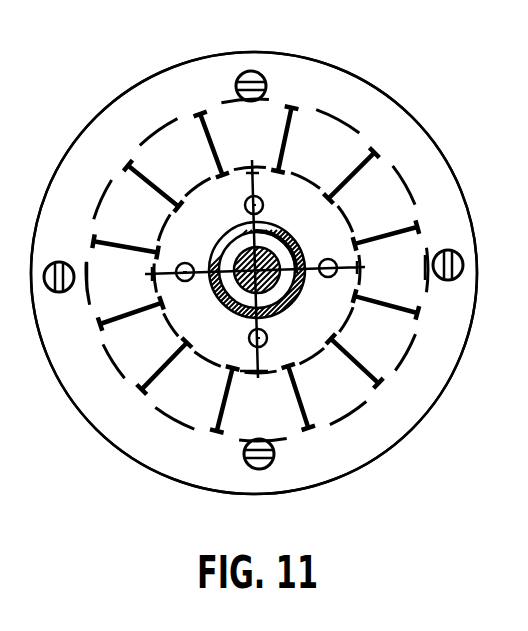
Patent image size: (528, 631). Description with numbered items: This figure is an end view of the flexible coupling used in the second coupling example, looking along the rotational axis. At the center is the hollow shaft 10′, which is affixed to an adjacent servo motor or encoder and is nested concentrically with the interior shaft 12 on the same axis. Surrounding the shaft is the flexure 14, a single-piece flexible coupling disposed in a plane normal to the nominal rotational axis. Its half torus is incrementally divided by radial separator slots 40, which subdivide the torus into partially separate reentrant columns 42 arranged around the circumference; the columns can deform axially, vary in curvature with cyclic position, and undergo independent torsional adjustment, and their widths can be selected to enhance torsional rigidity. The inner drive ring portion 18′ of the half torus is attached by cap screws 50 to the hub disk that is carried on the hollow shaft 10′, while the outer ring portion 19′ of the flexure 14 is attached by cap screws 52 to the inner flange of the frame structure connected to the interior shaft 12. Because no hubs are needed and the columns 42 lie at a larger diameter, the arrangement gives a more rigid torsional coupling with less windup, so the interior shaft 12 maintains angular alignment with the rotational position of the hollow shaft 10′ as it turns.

The flexure 14 is at (446, 56).
The outer ring portion 19′ is at (88, 157).
The cap screws 52 is at (264, 71).
The reentrant columns 42 is at (380, 328).
The radial separator slots 40 is at (152, 190).
The inner drive ring portion 18′ is at (343, 213).
The hollow shaft 10′ is at (287, 303).
The shaft 12 is at (240, 308).
The cap screws 50 is at (260, 198).